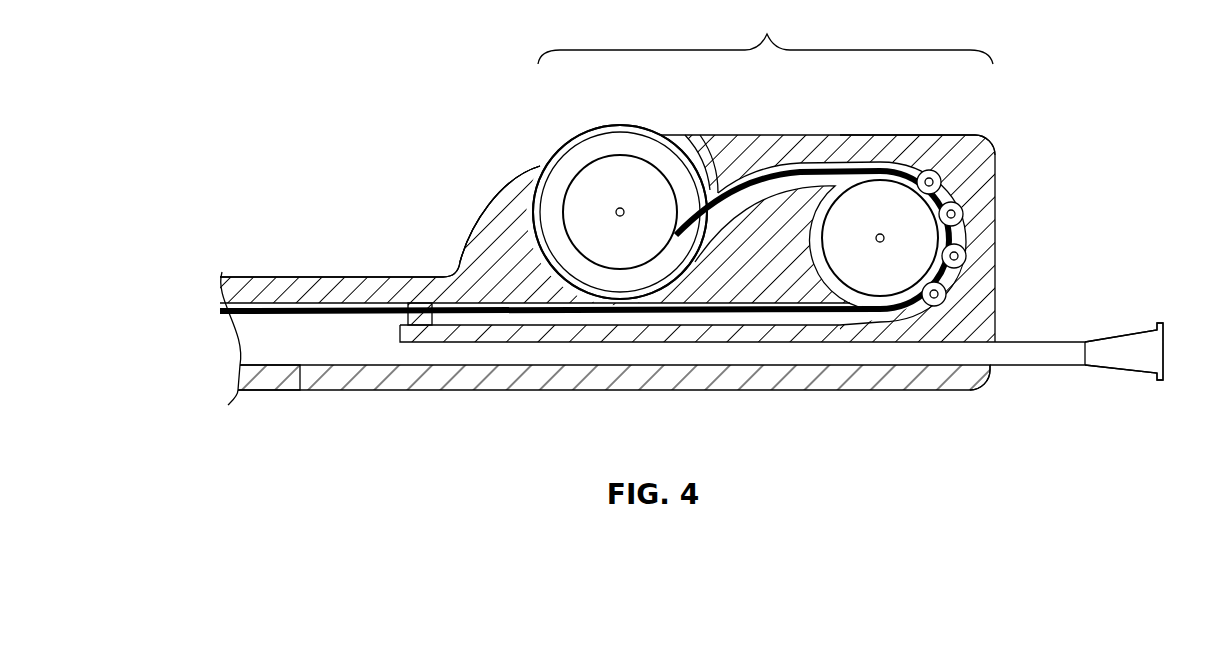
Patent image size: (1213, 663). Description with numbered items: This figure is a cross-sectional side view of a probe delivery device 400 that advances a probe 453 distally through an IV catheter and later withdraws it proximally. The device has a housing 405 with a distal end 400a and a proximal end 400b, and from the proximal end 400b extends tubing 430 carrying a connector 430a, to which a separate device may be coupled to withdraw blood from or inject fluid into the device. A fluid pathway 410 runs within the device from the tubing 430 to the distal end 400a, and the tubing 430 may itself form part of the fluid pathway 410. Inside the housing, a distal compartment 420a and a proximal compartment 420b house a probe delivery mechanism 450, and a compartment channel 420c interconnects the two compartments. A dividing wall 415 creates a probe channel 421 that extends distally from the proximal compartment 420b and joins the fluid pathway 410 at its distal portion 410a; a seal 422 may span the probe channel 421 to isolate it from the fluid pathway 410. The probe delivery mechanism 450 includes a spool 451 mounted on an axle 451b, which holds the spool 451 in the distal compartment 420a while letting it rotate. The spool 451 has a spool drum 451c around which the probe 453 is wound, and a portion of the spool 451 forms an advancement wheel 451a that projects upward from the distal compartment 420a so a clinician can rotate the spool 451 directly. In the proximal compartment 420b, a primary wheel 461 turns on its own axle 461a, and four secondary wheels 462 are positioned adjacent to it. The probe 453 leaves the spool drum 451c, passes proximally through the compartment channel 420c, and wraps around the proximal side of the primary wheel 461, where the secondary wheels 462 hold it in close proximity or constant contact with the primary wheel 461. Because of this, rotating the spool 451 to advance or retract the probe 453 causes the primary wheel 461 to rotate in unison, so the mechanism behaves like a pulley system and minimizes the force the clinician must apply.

The probe delivery device 400 is at (1073, 55).
The distal end 400a is at (259, 398).
The proximal end 400b is at (964, 398).
The housing 405 is at (868, 375).
The fluid pathway 410 is at (773, 355).
The distal portion of fluid pathway 410a is at (285, 348).
The dividing wall 415 is at (545, 342).
The distal compartment 420a is at (507, 173).
The proximal compartment 420b is at (882, 138).
The compartment channel 420c is at (685, 138).
The probe channel 421 is at (478, 296).
The seal 422 is at (418, 306).
The tubing 430 is at (1075, 350).
The connector 430a is at (1143, 330).
The probe delivery mechanism 450 is at (765, 32).
The spool 451 is at (597, 128).
The advancement wheel 451a is at (623, 128).
The axle 451b is at (615, 208).
The spool drum 451c is at (578, 168).
The probe 453 is at (265, 306).
The primary wheel 461 is at (906, 198).
The axle 461a is at (873, 240).
The secondary wheels 462 is at (948, 172).